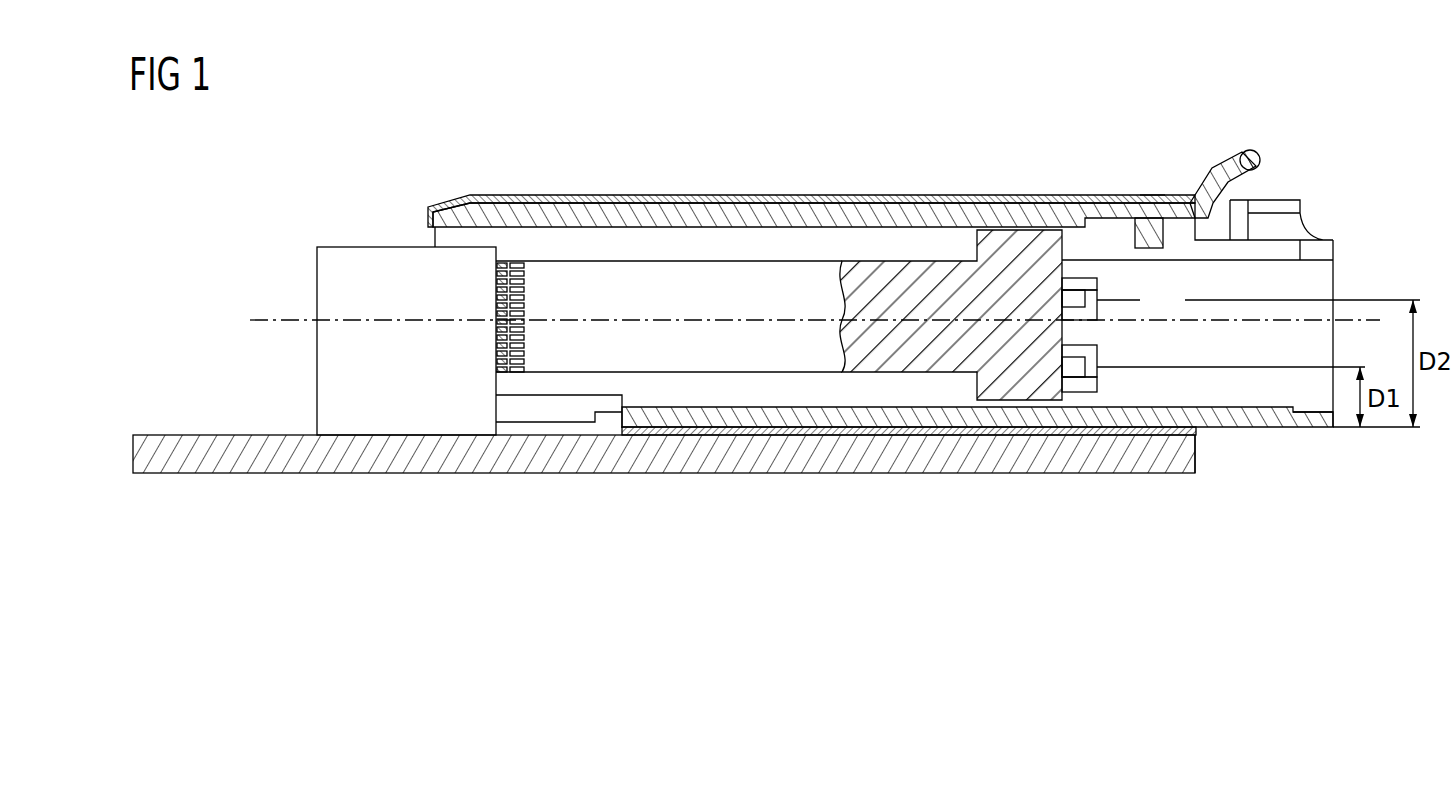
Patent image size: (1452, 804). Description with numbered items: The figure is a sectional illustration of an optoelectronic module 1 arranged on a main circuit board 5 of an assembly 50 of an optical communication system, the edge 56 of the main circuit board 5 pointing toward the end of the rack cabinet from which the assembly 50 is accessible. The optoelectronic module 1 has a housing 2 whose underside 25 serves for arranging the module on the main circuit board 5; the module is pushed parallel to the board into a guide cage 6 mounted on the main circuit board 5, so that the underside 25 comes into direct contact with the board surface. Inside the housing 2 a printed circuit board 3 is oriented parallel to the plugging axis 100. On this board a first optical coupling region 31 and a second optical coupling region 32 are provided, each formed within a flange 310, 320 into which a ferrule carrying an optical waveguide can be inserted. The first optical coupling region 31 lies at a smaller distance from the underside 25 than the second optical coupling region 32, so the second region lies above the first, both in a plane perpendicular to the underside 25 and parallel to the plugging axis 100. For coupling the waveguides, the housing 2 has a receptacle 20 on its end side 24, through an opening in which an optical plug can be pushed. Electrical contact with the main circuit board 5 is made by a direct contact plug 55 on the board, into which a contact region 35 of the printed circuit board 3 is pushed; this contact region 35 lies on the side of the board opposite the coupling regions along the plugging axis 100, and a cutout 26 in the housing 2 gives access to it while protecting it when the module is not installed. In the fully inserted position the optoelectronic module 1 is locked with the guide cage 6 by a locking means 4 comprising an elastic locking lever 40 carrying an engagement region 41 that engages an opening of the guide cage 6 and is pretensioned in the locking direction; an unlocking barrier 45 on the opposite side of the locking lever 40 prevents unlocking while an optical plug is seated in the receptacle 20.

The optoelectronic module 1 is at (1345, 208).
The housing 2 is at (683, 204).
The printed circuit board 3 is at (745, 277).
The locking means 4 is at (1247, 130).
The main circuit board 5 is at (803, 474).
The guide cage 6 is at (578, 196).
The receptacle 20 is at (1255, 390).
The end side 24 is at (1340, 276).
The underside 25 is at (1305, 430).
The cutout 26 is at (430, 238).
The first optical coupling region 31 is at (1100, 364).
The second optical coupling region 32 is at (1100, 305).
The contact region 35 is at (528, 344).
The locking lever 40 is at (1259, 157).
The engagement region 41 is at (1160, 196).
The unlocking barrier 45 is at (1145, 232).
The assembly 50 is at (343, 522).
The direct contact plug 55 is at (325, 284).
The edge 56 is at (1204, 490).
The plugging axis 100 is at (293, 322).
The flange 310 is at (1100, 384).
The flange 320 is at (1100, 284).